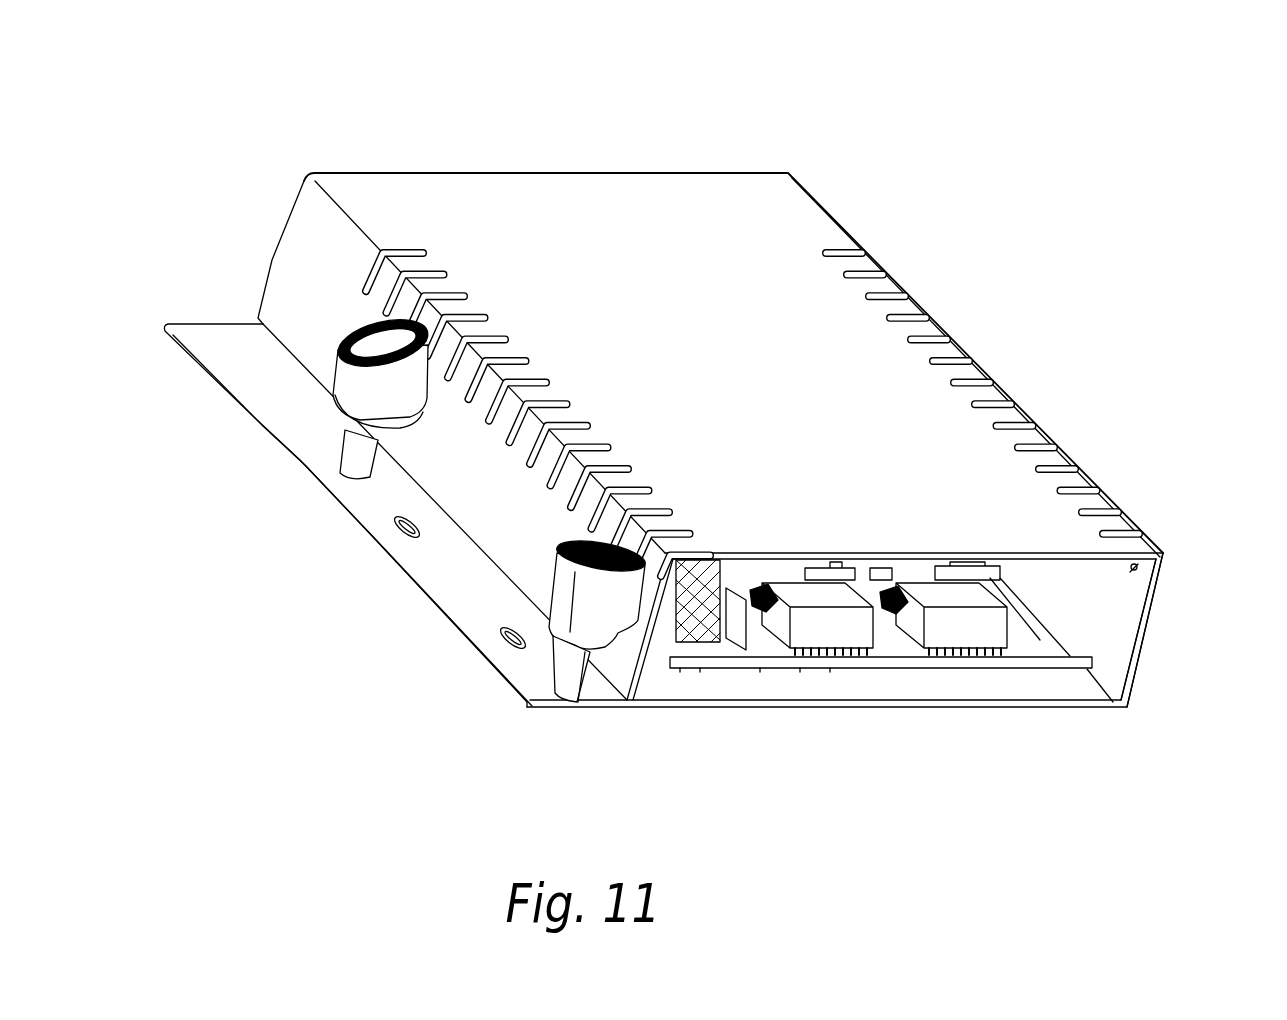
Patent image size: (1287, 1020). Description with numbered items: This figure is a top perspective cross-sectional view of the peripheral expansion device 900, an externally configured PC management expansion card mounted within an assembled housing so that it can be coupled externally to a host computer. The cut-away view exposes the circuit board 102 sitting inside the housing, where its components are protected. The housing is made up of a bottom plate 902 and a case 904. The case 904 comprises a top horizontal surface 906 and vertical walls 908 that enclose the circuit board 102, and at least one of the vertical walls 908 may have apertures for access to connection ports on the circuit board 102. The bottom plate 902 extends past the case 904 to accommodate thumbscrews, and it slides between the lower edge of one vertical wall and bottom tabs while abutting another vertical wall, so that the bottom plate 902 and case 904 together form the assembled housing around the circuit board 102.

The peripheral expansion device 900 is at (717, 88).
The bottom plate 902 is at (440, 563).
The case 904 is at (1140, 671).
The top horizontal surface 906 is at (739, 374).
The vertical walls 908 is at (713, 515).
The circuit board 102 is at (883, 635).